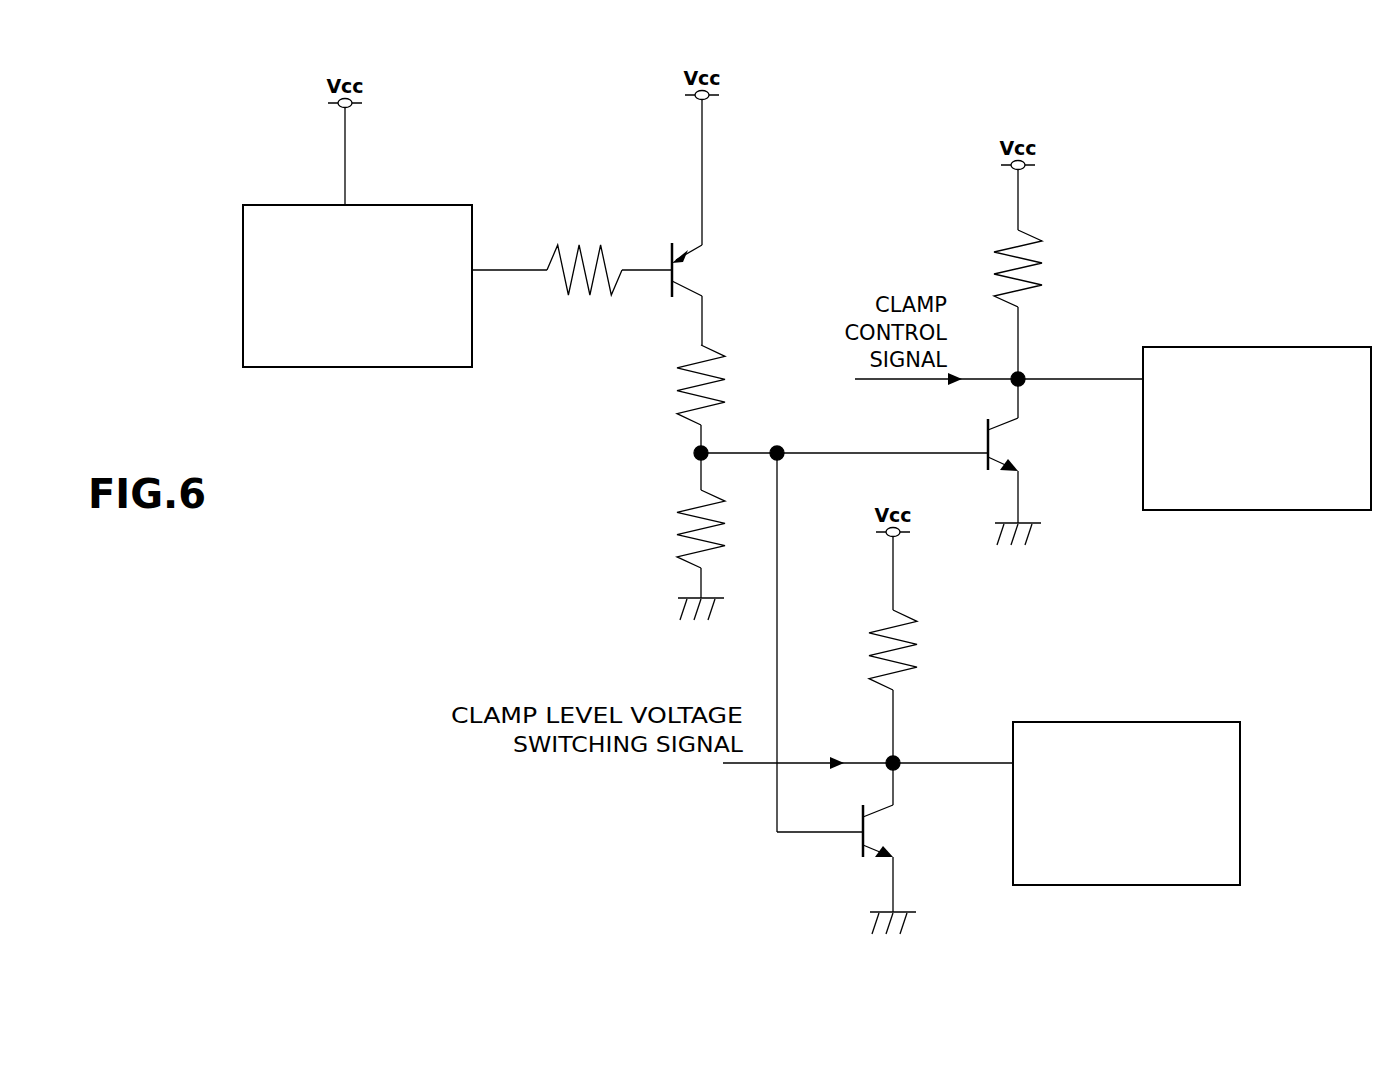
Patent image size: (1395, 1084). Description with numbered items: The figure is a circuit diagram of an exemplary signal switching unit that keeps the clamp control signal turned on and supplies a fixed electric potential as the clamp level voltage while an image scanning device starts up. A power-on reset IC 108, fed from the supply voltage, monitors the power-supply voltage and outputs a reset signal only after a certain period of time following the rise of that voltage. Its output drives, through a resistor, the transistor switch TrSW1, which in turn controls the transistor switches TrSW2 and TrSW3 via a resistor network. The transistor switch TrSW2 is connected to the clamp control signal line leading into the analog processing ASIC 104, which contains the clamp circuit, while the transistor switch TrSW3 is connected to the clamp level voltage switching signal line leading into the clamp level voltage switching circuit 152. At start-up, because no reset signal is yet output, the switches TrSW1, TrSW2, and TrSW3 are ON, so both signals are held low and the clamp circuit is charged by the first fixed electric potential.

The power-on reset IC 108 is at (355, 367).
The analog processing ASIC 104 is at (1255, 347).
The clamp level voltage switching circuit 152 is at (1124, 722).
The transistor switch TrSW1 is at (724, 206).
The transistor switch TrSW2 is at (1041, 341).
The transistor switch TrSW3 is at (914, 719).